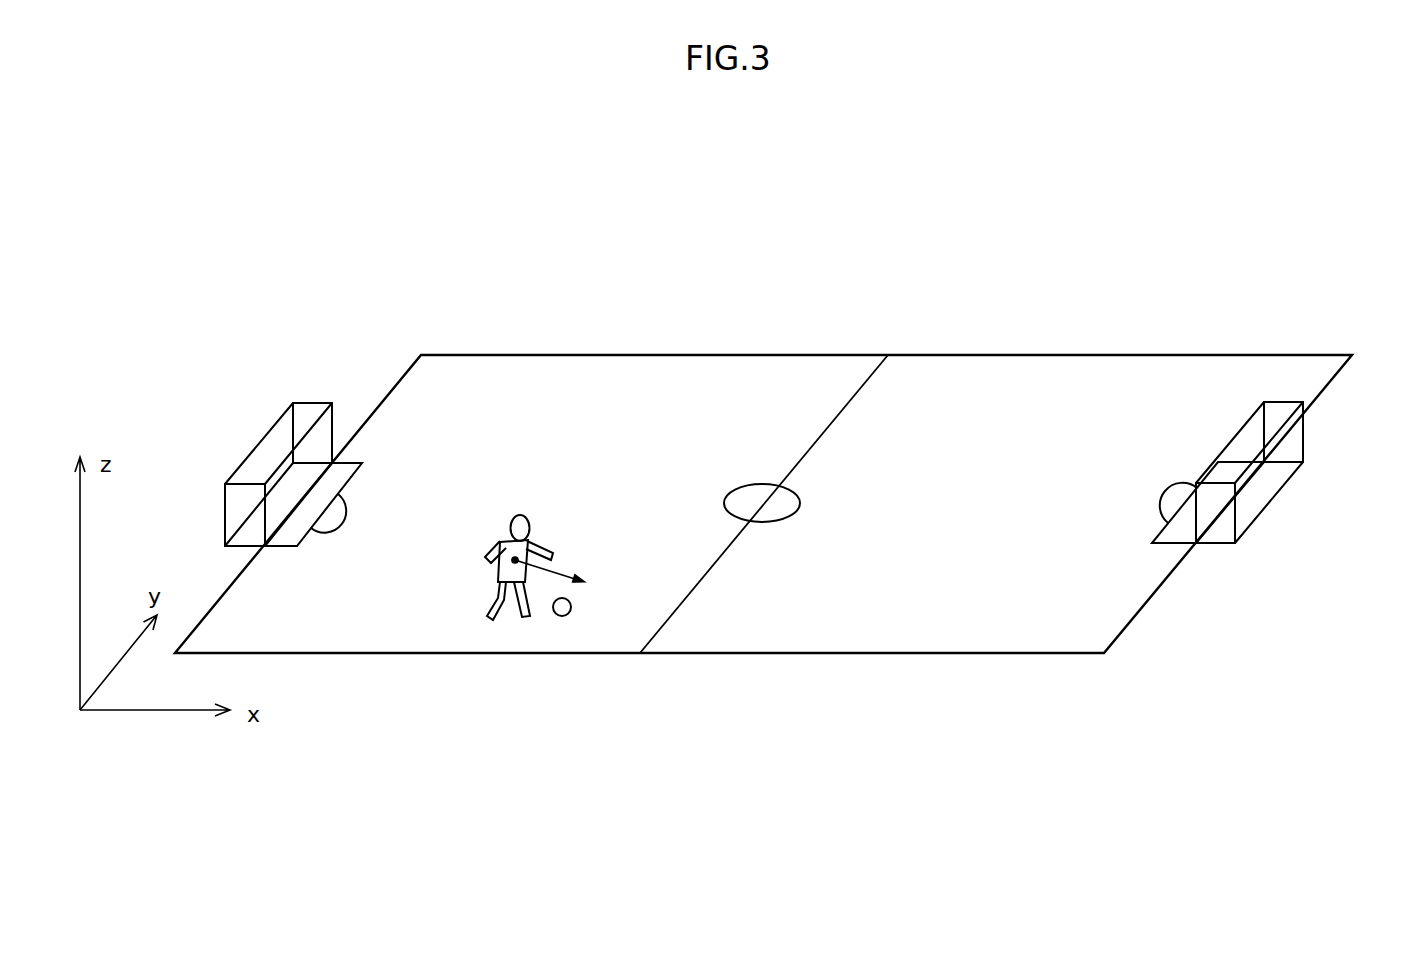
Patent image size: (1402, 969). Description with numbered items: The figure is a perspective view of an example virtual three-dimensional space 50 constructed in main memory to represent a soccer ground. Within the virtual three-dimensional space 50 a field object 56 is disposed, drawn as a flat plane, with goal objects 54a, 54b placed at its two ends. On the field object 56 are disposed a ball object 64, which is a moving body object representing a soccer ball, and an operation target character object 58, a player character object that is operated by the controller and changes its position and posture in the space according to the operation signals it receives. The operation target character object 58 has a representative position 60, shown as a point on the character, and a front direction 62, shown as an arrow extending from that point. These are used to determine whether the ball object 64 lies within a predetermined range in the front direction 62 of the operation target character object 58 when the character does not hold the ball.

The virtual three-dimensional space 50 is at (957, 270).
The goal object 54a is at (258, 442).
The goal object 54b is at (1303, 428).
The field object 56 is at (762, 653).
The operation target character object 58 is at (509, 528).
The representative position 60 is at (500, 567).
The front direction 62 is at (558, 573).
The ball object 64 is at (571, 607).